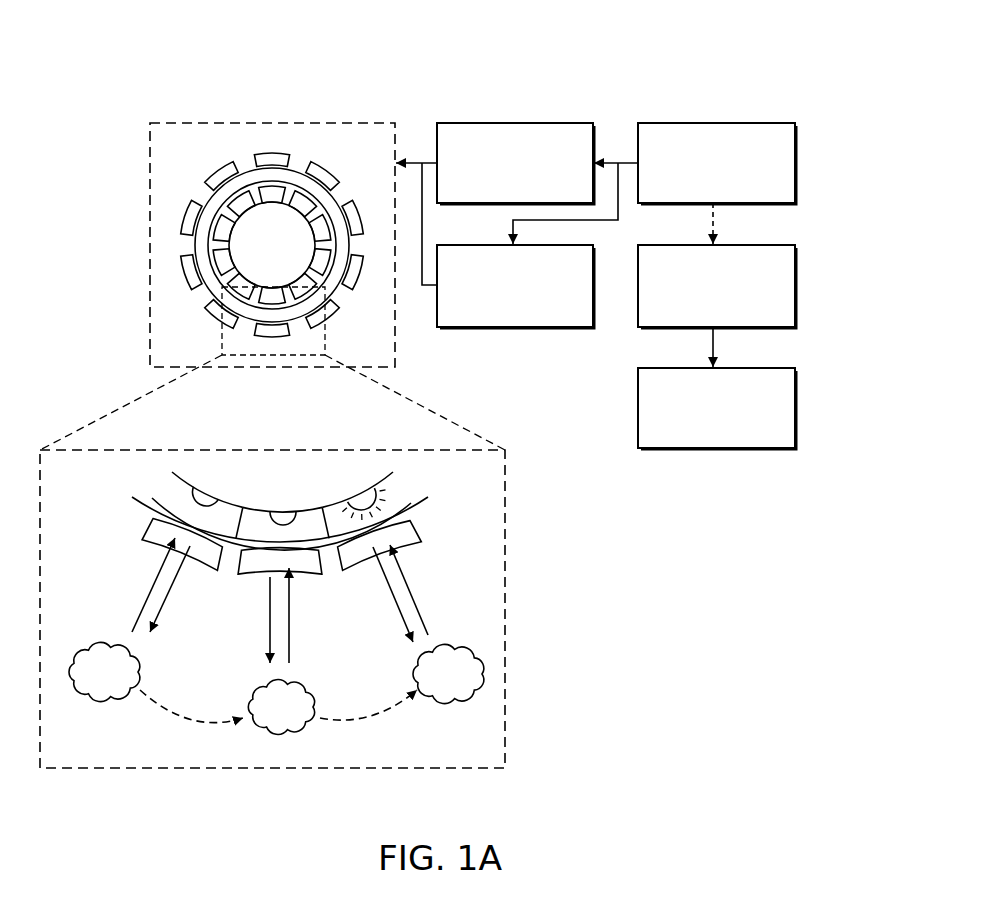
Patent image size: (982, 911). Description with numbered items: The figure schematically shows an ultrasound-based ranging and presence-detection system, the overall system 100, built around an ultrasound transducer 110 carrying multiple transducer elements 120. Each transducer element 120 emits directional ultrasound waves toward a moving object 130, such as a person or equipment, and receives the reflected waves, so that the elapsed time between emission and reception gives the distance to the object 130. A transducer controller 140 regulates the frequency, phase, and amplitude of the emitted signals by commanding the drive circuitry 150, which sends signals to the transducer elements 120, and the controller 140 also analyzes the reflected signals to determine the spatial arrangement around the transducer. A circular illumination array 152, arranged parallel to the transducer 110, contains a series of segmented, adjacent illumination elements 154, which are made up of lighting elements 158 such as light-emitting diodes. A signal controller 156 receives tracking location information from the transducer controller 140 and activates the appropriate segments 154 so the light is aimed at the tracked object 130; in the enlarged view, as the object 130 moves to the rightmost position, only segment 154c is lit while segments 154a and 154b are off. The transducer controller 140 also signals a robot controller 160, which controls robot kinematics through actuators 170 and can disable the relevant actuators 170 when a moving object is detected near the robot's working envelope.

The overall system 100 is at (634, 52).
The ultrasound transducer 110 is at (157, 121).
The transducer elements 120 is at (318, 151).
The object 130 is at (90, 683).
The transducer controller 140 is at (797, 160).
The drive circuitry 150 is at (515, 123).
The circular illumination array 152 is at (218, 203).
The illumination elements 154 is at (317, 212).
The illumination segment 154a is at (177, 498).
The illumination segment 154b is at (258, 520).
The illumination segment 154c is at (395, 493).
The signal controller 156 is at (522, 329).
The lighting elements 158 is at (288, 511).
The robot controller 160 is at (797, 280).
The actuators 170 is at (797, 403).